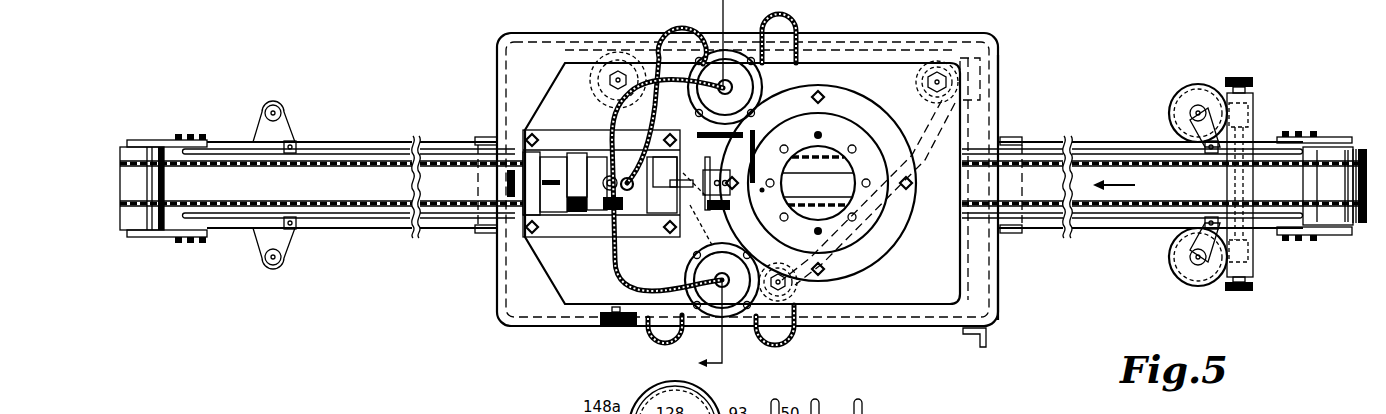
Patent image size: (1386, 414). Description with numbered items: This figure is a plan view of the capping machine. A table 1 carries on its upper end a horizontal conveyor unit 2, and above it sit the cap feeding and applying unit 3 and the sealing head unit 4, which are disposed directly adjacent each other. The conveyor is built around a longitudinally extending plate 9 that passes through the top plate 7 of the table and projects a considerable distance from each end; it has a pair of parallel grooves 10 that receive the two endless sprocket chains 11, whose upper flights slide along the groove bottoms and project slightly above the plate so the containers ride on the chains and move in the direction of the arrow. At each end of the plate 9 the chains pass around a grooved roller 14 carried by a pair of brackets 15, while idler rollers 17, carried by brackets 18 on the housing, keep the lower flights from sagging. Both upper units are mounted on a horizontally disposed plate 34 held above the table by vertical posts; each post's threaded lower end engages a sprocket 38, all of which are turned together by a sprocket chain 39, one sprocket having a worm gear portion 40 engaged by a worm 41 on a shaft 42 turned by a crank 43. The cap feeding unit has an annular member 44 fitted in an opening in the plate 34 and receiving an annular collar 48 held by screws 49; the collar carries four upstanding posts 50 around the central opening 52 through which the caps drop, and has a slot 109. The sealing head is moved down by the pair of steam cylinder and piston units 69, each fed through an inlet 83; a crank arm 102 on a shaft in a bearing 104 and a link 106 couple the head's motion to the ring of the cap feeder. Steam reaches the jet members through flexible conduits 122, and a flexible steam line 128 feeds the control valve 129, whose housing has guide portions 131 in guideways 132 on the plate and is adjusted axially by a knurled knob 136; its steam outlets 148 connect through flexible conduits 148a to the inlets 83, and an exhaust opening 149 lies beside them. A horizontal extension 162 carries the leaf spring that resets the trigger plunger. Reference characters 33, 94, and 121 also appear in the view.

The table 1 is at (891, 36).
The horizontal conveyor unit 2 is at (390, 229).
The cap feeding and applying unit 3 is at (878, 268).
The sealing head unit 4 is at (677, 245).
The top plate 7 is at (699, 187).
The longitudinally extending plate 9 is at (338, 183).
The longitudinally extending grooves 10 is at (333, 163).
The chains 11 is at (366, 163).
The grooved roller 14 is at (147, 181).
The brackets 15 is at (153, 232).
The idler roller 17 is at (476, 185).
The brackets 18 is at (488, 136).
The slot end 33 is at (400, 157).
The plate 34 is at (578, 273).
The sprocket 38 is at (596, 64).
The sprocket chain 39 is at (898, 237).
The worm gear portion 40 is at (920, 80).
The worm 41 is at (1000, 90).
The shaft 42 is at (1000, 292).
The crank 43 is at (988, 340).
The annular member 44 is at (902, 165).
The annular collar 48 is at (916, 182).
The screws 49 is at (862, 218).
The upstanding posts 50 is at (818, 177).
The central opening 52 is at (850, 172).
The steam cylinder and piston units 69 is at (757, 88).
The inlet 83 is at (733, 78).
The central bore 94 is at (745, 182).
The crank arm 102 is at (726, 98).
The bearing 104 is at (758, 143).
The link 106 is at (748, 165).
The slot 109 is at (764, 193).
The cable clamp 121 is at (619, 326).
The flexible conduit 122 is at (794, 21).
The flexible steam line 128 is at (661, 45).
The control valve 129 is at (583, 205).
The guide portions 131 is at (587, 150).
The guideways 132 is at (553, 150).
The knurled knob 136 is at (516, 165).
The steam outlets 148 is at (634, 135).
The flexible conduit 148a is at (602, 90).
The exhaust opening 149 is at (608, 195).
The horizontal extension 162 is at (710, 170).